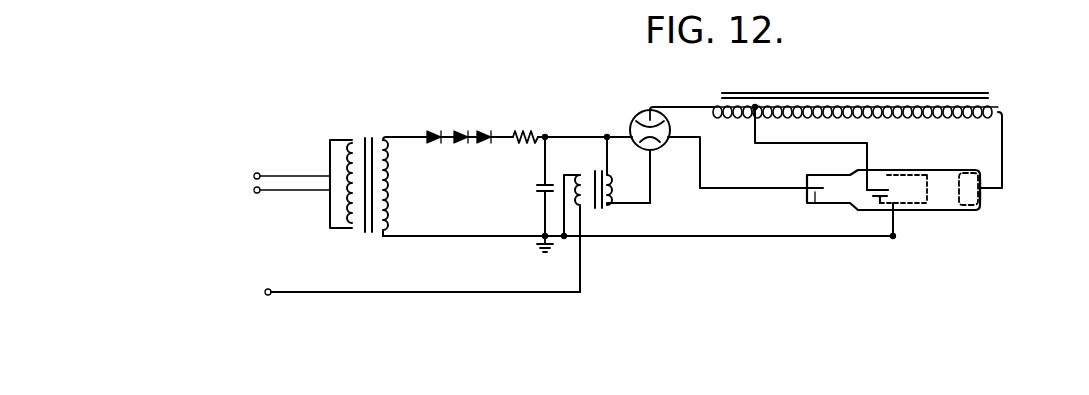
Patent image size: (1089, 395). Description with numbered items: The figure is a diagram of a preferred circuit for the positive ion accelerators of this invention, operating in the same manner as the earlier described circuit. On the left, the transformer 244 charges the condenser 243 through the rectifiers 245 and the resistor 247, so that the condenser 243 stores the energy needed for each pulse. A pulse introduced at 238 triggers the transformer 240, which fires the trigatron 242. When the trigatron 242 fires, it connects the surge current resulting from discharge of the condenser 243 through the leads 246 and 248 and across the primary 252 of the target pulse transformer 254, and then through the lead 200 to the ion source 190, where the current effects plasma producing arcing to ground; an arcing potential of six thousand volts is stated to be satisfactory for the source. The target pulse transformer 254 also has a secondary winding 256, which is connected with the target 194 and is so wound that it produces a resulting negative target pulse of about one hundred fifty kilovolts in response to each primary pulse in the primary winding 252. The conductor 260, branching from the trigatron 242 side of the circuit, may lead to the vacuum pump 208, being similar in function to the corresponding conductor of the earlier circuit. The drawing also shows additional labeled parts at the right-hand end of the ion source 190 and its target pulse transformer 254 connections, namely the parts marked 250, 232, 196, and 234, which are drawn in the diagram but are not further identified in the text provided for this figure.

The transformer 244 is at (368, 135).
The rectifiers 245 is at (450, 132).
The resistor 247 is at (529, 131).
The lead 246 is at (576, 134).
The condenser 243 is at (535, 188).
The trigatron 242 is at (628, 116).
The transformer 240 is at (600, 203).
The pulse input 238 is at (270, 289).
The conductor 260 is at (715, 189).
The lead 248 is at (692, 105).
The target pulse transformer 254 is at (880, 76).
The primary winding 252 is at (729, 118).
The secondary winding 256 is at (928, 118).
The conductor 250 is at (1004, 120).
The lead 200 is at (844, 140).
The ion source 190 is at (882, 188).
The vacuum pump 208 is at (818, 197).
The electrode region 232 is at (923, 190).
The end electrode 196 is at (968, 172).
The target 194 is at (985, 198).
The tube wall 234 is at (953, 211).